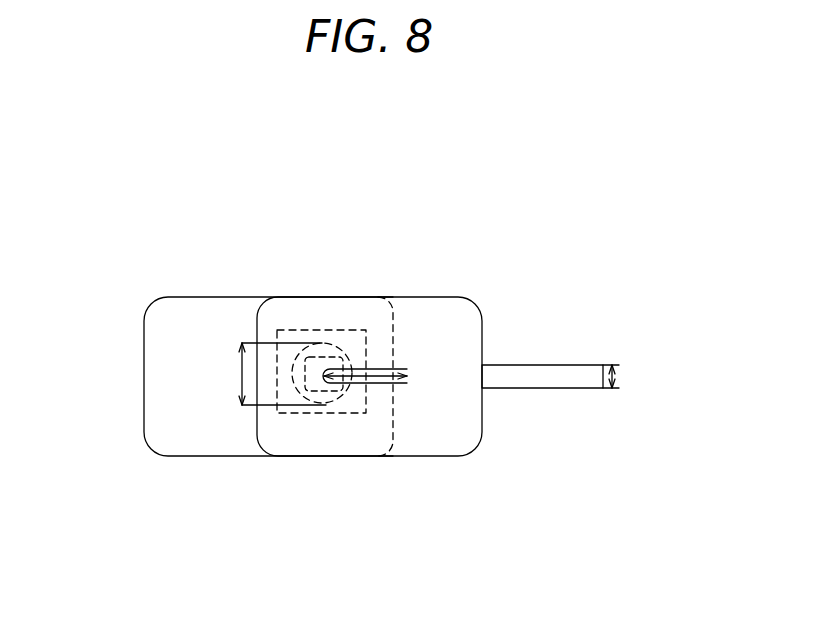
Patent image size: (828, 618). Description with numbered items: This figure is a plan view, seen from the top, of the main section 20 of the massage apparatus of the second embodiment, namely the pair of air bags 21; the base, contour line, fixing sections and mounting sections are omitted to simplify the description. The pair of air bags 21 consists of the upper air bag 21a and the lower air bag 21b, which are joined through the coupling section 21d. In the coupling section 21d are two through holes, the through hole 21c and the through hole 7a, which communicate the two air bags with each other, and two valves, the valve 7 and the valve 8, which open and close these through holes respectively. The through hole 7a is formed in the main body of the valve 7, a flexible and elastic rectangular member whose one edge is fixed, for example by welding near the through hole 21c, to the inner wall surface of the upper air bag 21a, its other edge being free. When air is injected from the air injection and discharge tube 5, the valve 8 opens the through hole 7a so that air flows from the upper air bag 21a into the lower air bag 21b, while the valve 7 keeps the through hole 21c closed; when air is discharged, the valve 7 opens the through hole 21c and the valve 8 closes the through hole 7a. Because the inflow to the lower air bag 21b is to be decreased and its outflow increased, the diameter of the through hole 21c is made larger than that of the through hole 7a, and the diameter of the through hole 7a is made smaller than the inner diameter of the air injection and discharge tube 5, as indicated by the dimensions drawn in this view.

The valve unit 20 is at (353, 147).
The air bags 21 is at (488, 302).
The upper air bag 21a is at (417, 313).
The lower air bag 21b is at (153, 398).
The through hole 21c is at (347, 350).
The coupling section 21d is at (313, 318).
The valve 7 is at (284, 330).
The through hole 7a is at (318, 378).
The valve 8 is at (330, 397).
The air injection and discharge tube 5 is at (552, 380).